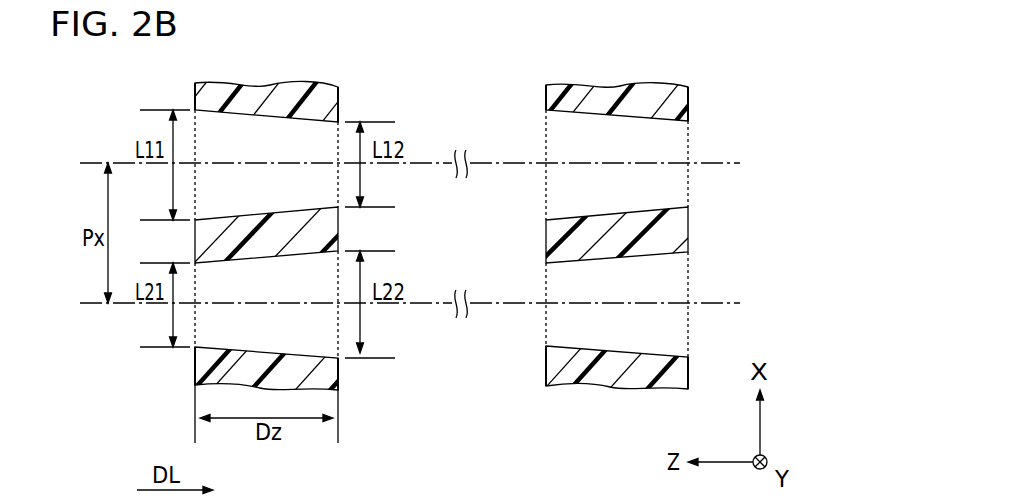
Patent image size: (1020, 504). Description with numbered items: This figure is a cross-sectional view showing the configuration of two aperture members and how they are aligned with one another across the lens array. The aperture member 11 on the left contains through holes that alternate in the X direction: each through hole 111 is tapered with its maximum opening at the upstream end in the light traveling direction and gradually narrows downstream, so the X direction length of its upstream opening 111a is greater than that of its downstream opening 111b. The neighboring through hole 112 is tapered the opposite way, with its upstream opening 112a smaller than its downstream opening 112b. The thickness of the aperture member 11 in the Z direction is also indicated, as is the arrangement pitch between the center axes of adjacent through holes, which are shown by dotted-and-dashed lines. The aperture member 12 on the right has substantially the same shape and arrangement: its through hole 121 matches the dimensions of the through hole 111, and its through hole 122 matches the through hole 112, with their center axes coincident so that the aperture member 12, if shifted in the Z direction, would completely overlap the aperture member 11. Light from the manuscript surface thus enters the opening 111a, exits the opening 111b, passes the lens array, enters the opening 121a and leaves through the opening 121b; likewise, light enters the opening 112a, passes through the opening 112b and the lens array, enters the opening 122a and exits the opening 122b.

The aperture member 11 is at (330, 102).
The aperture member 12 is at (680, 100).
The through hole 111 is at (292, 118).
The through hole 112 is at (232, 350).
The through hole 121 is at (643, 118).
The through hole 122 is at (589, 347).
The upstream opening 111a is at (178, 123).
The downstream opening 111b is at (347, 136).
The upstream opening 112a is at (197, 334).
The downstream opening 112b is at (343, 345).
The opening 121a is at (547, 200).
The opening 121b is at (690, 148).
The opening 122a is at (547, 322).
The opening 122b is at (690, 283).